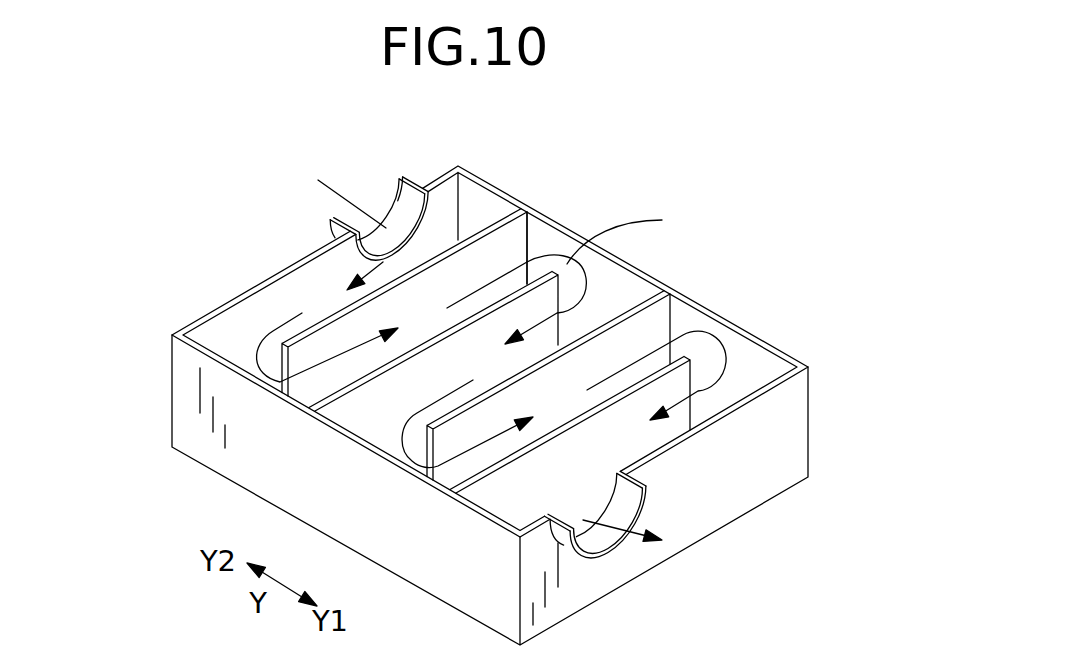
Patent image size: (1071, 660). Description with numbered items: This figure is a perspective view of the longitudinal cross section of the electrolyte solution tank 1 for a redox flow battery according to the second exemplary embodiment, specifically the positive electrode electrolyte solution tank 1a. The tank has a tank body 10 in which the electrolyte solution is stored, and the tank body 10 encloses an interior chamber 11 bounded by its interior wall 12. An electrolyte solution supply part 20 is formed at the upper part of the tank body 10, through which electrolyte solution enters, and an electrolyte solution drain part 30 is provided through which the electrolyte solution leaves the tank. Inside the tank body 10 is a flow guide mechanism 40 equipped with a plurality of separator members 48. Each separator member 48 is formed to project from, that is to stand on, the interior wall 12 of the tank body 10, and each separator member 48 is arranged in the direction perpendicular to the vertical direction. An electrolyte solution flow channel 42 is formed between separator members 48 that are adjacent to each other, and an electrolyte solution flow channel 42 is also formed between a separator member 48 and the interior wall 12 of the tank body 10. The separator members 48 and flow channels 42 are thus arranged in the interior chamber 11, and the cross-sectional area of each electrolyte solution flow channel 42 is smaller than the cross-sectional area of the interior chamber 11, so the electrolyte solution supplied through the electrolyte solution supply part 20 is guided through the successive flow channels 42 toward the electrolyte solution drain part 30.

The electrolyte solution tank 1 is at (279, 177).
The positive electrode electrolyte solution tank 1a is at (436, 372).
The tank body 10 is at (480, 178).
The interior chamber 11 is at (221, 331).
The interior wall 12 is at (744, 364).
The electrolyte solution supply part 20 is at (406, 176).
The electrolyte solution drain part 30 is at (650, 498).
The flow guide mechanism 40 is at (333, 318).
The electrolyte solution flow channel 42 is at (532, 240).
The separator member 48 is at (442, 359).